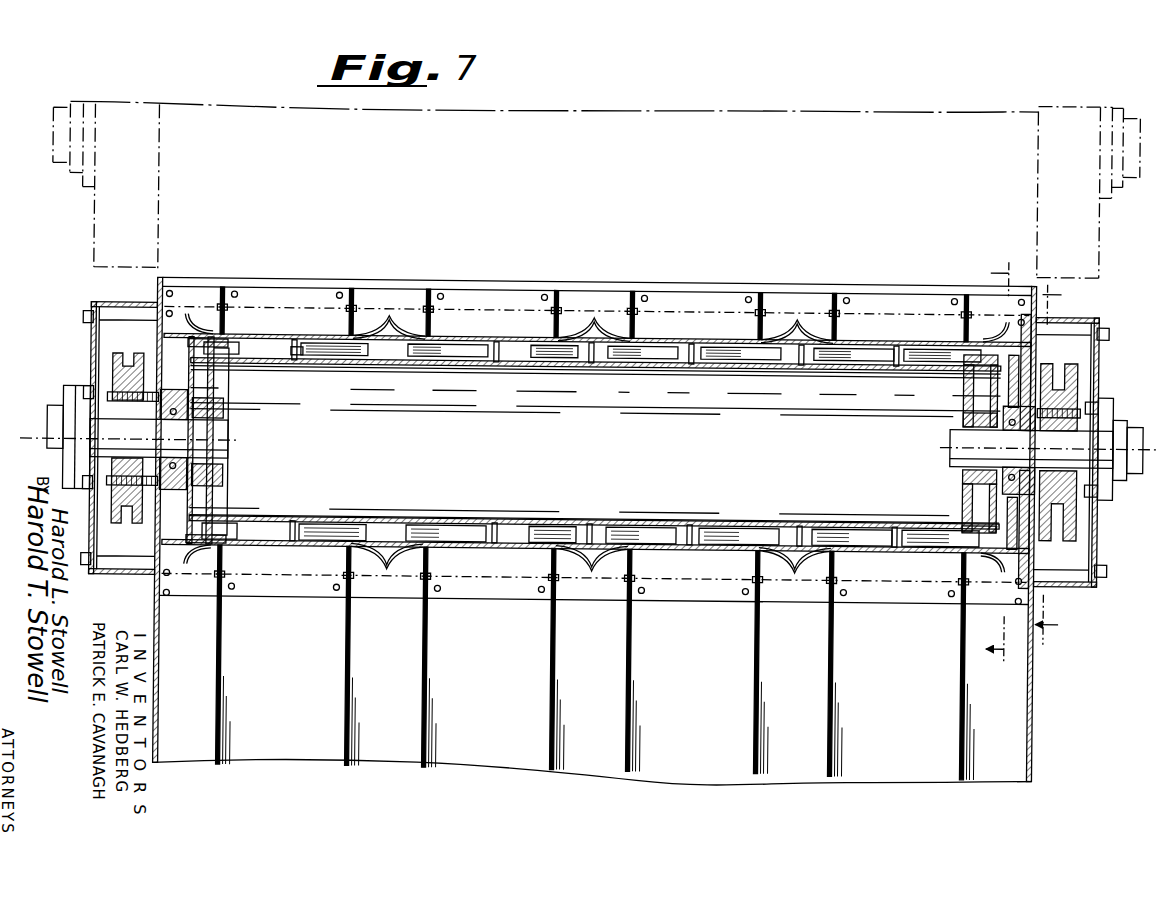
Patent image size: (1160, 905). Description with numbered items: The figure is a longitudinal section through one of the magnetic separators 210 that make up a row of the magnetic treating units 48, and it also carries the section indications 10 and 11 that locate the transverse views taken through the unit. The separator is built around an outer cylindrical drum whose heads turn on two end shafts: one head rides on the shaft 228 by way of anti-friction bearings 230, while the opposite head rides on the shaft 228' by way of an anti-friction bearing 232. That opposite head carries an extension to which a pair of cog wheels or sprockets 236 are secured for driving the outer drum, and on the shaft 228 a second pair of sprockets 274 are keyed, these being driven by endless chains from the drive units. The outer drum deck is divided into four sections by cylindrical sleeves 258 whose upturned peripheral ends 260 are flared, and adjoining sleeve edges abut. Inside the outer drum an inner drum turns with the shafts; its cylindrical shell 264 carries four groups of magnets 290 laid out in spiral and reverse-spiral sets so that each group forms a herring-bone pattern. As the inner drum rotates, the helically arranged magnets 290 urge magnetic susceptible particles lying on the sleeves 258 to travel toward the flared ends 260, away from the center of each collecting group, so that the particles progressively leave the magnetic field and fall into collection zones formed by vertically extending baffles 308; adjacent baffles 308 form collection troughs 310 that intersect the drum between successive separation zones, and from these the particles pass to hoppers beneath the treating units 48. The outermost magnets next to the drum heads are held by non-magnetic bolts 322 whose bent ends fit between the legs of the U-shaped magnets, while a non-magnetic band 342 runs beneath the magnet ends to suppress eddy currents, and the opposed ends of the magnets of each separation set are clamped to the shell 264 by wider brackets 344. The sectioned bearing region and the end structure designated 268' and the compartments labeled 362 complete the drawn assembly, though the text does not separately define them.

The section line 10- 10 is at (1059, 465).
The section line 11- 11 is at (1000, 457).
The magnetic treating units 48 is at (1092, 305).
The magnetic separator 210 is at (697, 281).
The shaft 228 is at (1036, 448).
The shaft 228' is at (153, 438).
The anti-friction bearings 230 is at (1012, 430).
The anti-friction bearing 232 is at (168, 426).
The cog wheels or sprockets 236 is at (112, 359).
The cylindrical sleeves 258 is at (271, 336).
The upturned peripheral ends 260 is at (196, 320).
The cylindrical shell 264 is at (616, 360).
The flange plate 268' is at (237, 441).
The cog wheels or sprockets 274 is at (1070, 360).
The magnets 290 is at (276, 355).
The vertically extending baffles 308 is at (546, 295).
The collection troughs 310 is at (375, 712).
The bolts 322 is at (252, 362).
The non-magnetic band 342 is at (295, 358).
The bracket 344 is at (402, 355).
The compartment 362 is at (262, 652).